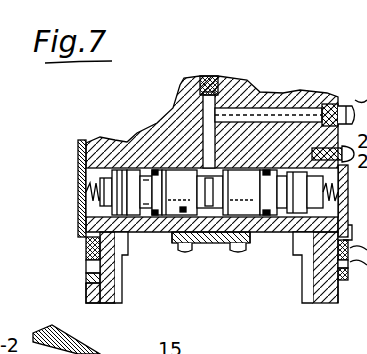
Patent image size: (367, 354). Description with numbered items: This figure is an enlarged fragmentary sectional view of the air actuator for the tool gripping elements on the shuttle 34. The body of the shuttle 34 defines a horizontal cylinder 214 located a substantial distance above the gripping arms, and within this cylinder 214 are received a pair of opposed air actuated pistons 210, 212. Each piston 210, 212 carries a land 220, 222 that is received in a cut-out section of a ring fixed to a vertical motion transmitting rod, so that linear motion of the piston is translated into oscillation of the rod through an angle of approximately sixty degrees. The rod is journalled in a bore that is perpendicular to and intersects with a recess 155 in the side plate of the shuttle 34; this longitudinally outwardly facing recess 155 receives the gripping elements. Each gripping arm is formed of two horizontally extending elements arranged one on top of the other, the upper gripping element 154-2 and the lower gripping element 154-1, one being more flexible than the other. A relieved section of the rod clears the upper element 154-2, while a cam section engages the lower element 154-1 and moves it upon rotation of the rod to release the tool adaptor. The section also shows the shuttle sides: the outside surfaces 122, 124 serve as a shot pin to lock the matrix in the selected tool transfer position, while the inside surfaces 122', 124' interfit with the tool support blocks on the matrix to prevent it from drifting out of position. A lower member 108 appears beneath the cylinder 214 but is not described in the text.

The tool transfer shuttle 34 is at (192, 78).
The piston land 220 is at (117, 170).
The piston land 222 is at (283, 168).
The horizontal cylinder 214 is at (92, 174).
The upper gripping element 154-2 is at (86, 250).
The lower gripping element 154-1 is at (86, 265).
The recess 155 is at (88, 279).
The outside surface of shuttle 124 is at (92, 308).
The inside surface of shuttle side 124' is at (149, 282).
The air actuated piston 210 is at (167, 233).
The air actuated piston 212 is at (257, 229).
The manifold block 108 is at (208, 245).
The inside surface of shuttle side 122' is at (291, 286).
The outside surface of shuttle 122 is at (350, 297).